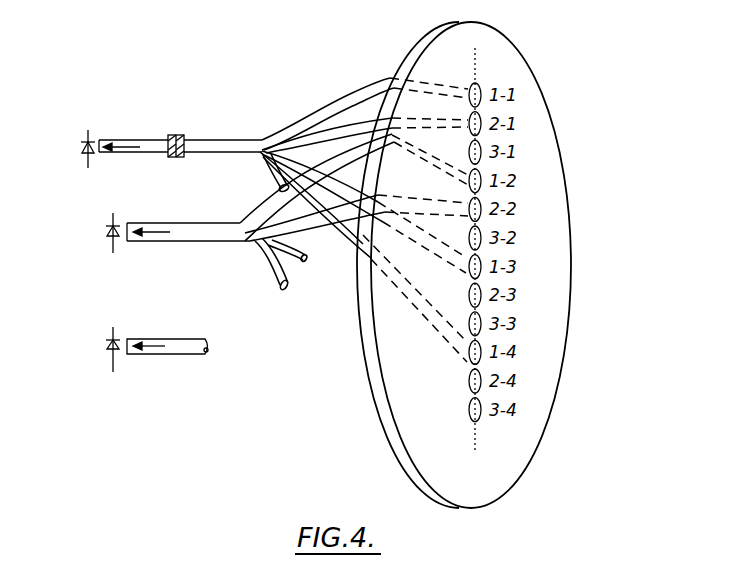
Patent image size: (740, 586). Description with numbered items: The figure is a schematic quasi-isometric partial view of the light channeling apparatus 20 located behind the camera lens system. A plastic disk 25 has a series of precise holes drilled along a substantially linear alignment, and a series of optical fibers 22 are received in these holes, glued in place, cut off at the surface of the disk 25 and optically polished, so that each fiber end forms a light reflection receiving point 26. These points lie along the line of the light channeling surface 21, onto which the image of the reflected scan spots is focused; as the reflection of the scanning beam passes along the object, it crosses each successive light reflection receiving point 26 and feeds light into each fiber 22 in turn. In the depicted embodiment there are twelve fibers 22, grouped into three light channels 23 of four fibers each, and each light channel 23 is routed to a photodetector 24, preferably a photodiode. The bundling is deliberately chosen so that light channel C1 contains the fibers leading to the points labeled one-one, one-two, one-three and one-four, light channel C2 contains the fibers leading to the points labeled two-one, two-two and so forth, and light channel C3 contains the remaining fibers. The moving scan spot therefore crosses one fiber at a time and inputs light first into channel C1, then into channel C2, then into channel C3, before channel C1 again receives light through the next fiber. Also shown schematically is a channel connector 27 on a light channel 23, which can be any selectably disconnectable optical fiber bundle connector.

The distribution disk 20 is at (493, 265).
The light channeling surface 21 is at (476, 450).
The optical fiber 22 is at (334, 97).
The light channel 23 is at (236, 112).
The photodetector 24 is at (88, 133).
The plastic disk 25 is at (566, 336).
The light reflection receiving point 26 is at (481, 88).
The channel connector 27 is at (171, 158).
The light channel C1 is at (217, 158).
The light channel C2 is at (250, 212).
The light channel C3 is at (157, 352).